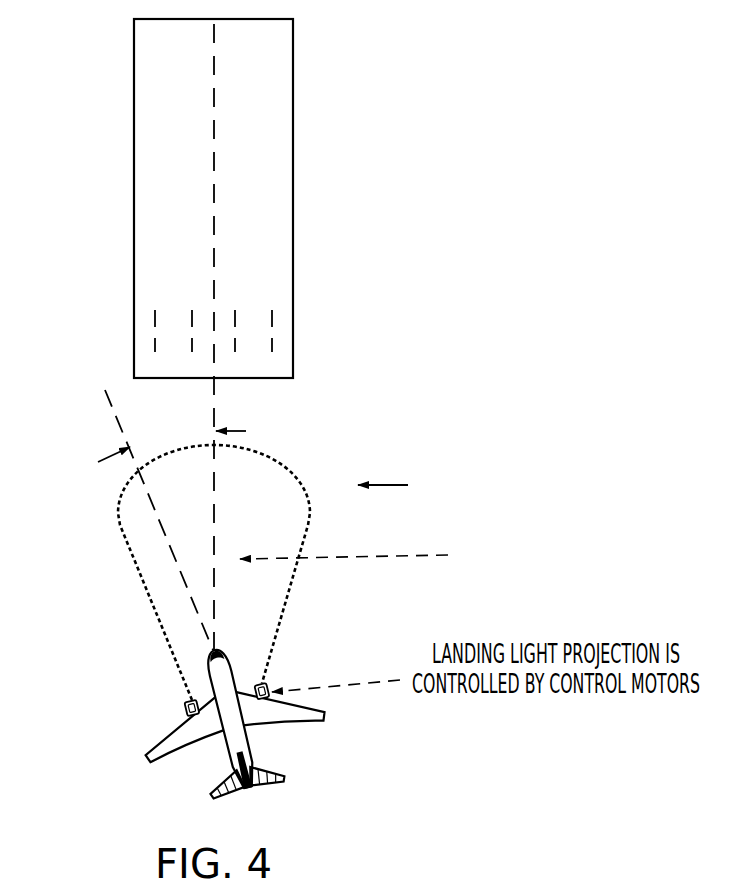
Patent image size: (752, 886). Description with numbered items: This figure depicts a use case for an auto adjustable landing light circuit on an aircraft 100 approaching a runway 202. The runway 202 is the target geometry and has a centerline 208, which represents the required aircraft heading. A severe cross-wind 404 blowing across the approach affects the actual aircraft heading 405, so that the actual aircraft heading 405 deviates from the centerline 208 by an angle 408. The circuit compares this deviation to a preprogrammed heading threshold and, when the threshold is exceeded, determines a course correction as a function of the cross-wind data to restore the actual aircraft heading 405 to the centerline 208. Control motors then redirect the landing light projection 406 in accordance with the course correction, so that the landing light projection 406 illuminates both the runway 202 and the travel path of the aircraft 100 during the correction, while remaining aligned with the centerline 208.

The aircraft 100 is at (325, 715).
The runway 202 is at (293, 166).
The centerline 208 is at (216, 408).
The cross-wind 404 is at (387, 485).
The actual aircraft heading 405 is at (114, 414).
The landing light projection 406 is at (389, 558).
The angle 408 is at (195, 435).